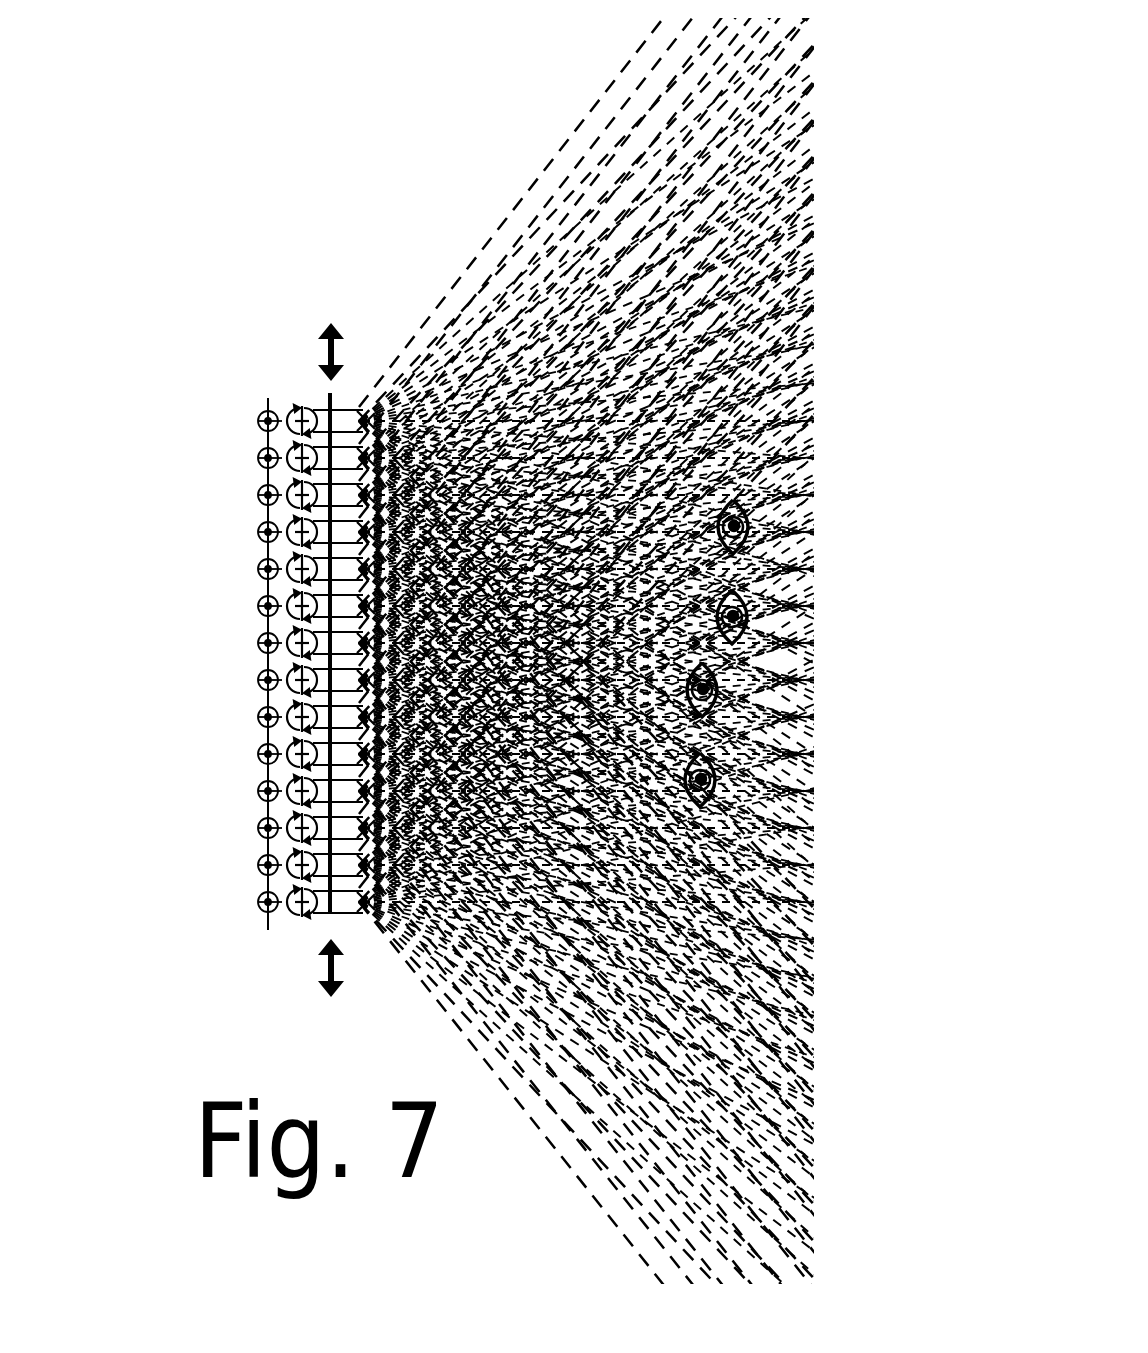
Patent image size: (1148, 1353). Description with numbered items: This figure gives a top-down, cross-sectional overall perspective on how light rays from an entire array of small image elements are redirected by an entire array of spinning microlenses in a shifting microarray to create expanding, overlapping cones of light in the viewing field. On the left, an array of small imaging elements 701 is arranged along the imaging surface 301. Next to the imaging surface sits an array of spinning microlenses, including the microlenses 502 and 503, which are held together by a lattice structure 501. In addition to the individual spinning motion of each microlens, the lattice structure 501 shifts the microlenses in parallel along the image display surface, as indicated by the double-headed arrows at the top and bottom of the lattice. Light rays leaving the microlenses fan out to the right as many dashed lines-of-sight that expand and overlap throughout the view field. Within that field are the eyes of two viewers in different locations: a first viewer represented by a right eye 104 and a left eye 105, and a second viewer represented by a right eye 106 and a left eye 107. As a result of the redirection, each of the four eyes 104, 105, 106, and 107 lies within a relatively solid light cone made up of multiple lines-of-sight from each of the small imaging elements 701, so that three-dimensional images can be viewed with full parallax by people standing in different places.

The right eye 104 is at (760, 518).
The left eye 105 is at (753, 598).
The right eye 106 is at (723, 692).
The left eye 107 is at (722, 793).
The imaging surface 301 is at (265, 400).
The lattice structure 501 is at (327, 395).
The spinning microlens 502 is at (310, 770).
The spinning microlens 503 is at (318, 852).
The small imaging elements 701 is at (257, 424).